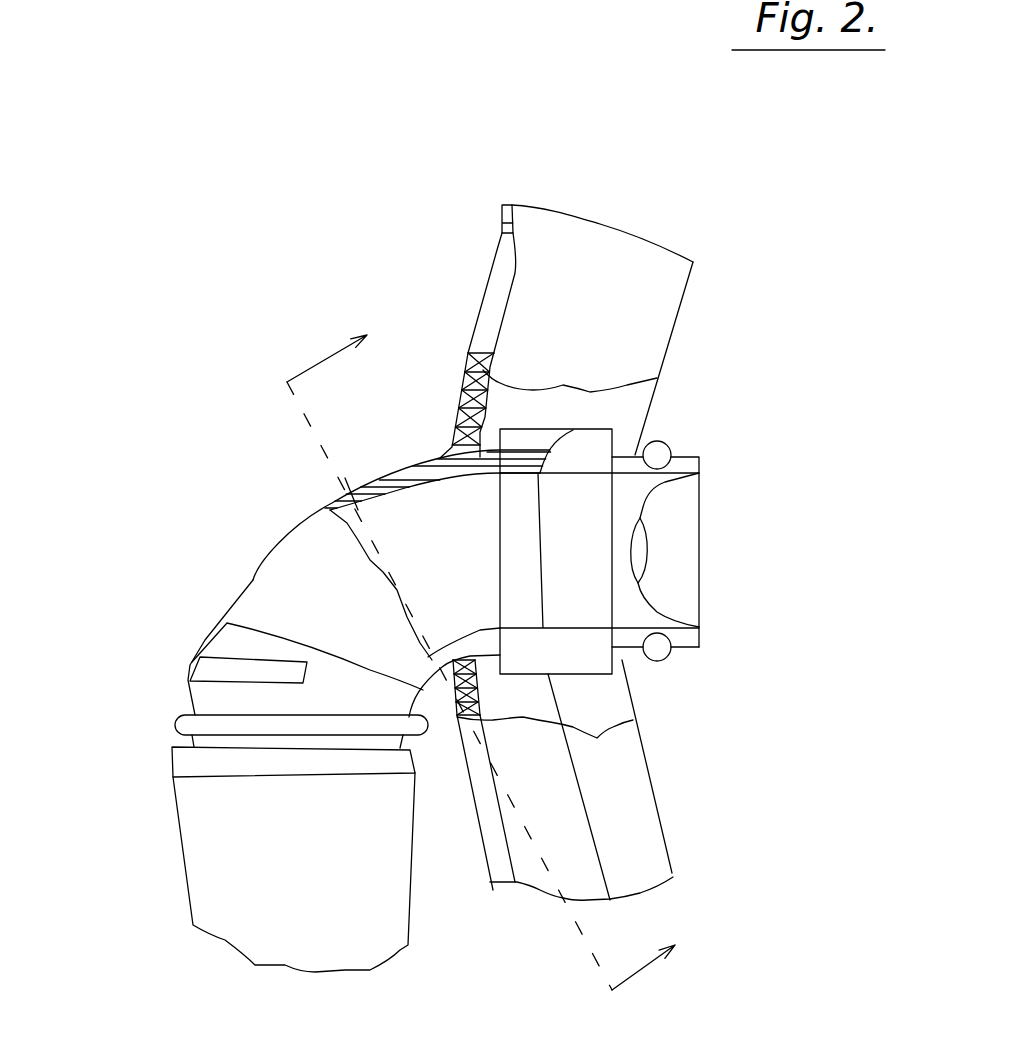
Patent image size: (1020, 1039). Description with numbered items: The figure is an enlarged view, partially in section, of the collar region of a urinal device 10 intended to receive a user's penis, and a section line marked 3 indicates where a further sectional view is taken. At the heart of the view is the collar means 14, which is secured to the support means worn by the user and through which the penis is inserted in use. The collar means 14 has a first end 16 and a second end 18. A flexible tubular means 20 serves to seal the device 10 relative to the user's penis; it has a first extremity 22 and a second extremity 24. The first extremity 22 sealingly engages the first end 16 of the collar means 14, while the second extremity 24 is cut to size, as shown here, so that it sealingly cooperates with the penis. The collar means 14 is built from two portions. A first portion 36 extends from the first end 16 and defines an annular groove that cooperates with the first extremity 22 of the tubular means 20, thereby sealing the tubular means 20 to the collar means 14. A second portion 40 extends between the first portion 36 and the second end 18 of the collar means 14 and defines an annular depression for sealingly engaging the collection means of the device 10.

The urinal device 10 is at (253, 303).
The collar means 14 is at (326, 478).
The first end 16 is at (688, 457).
The second end 18 is at (270, 821).
The flexible tubular means 20 is at (678, 480).
The first extremity 22 is at (699, 627).
The second extremity 24 is at (653, 513).
The first portion 36 is at (597, 445).
The second portion 40 is at (283, 580).
The section line 3- 3 is at (493, 657).